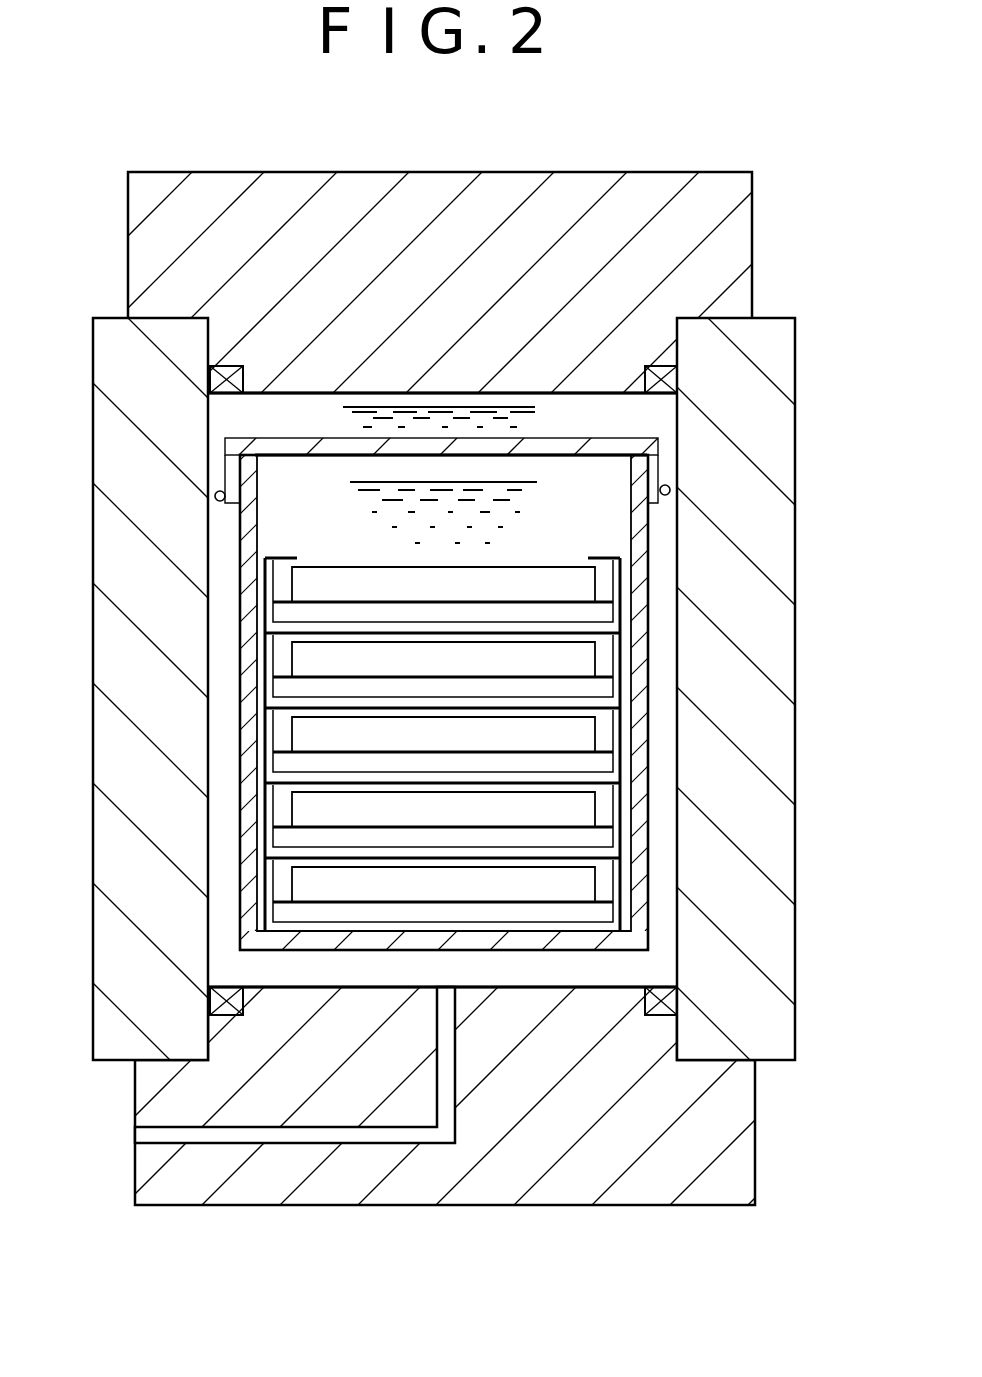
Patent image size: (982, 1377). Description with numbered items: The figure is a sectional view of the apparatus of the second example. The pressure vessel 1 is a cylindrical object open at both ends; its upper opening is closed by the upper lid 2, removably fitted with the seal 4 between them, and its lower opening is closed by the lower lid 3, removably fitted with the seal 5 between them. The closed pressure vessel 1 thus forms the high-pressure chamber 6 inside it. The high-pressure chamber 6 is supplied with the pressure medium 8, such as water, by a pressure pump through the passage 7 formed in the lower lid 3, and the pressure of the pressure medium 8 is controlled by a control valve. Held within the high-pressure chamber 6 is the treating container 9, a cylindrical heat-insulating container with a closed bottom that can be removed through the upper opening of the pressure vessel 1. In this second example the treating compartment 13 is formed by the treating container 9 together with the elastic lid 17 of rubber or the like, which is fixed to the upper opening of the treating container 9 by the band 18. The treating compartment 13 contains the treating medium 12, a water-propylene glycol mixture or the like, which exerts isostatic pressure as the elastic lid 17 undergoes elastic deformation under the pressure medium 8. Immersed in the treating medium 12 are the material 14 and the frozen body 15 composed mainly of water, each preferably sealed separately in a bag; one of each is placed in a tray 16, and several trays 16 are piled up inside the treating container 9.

The pressure vessel 1 is at (783, 673).
The upper lid 2 is at (150, 266).
The lower lid 3 is at (265, 1177).
The seal 4 is at (208, 380).
The seal 5 is at (208, 1005).
The high-pressure chamber 6 is at (222, 527).
The passage 7 is at (138, 1138).
The pressure medium 8 is at (453, 405).
The treating container 9 is at (247, 677).
The treating medium 12 is at (512, 483).
The treating compartment 13 is at (255, 538).
The material 14 is at (588, 582).
The frozen body 15 is at (597, 610).
The tray 16 is at (255, 765).
The elastic lid 17 is at (640, 433).
The band 18 is at (670, 483).